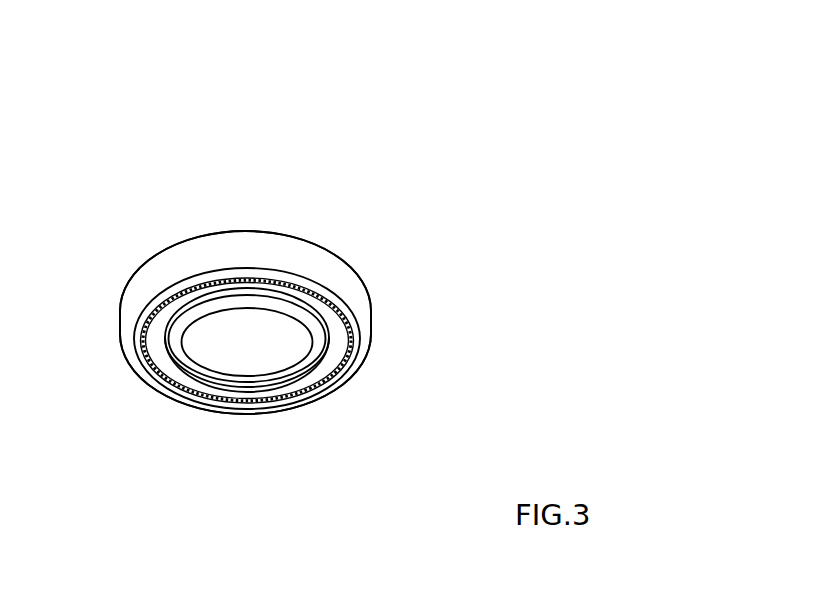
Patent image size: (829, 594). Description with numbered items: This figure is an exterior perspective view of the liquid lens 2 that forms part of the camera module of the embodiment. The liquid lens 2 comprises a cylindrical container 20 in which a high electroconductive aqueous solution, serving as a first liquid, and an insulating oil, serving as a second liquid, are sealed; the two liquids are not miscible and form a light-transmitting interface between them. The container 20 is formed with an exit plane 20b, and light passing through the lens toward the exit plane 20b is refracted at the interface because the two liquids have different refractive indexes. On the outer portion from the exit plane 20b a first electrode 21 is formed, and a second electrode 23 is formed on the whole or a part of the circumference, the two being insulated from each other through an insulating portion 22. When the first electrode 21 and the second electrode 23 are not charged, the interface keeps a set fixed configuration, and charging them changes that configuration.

The liquid lens 2 is at (310, 227).
The cylindrical container 20 is at (152, 262).
The exit plane 20b is at (263, 355).
The first electrode 21 is at (322, 372).
The insulating portion 22 is at (356, 342).
The second electrode 23 is at (348, 280).